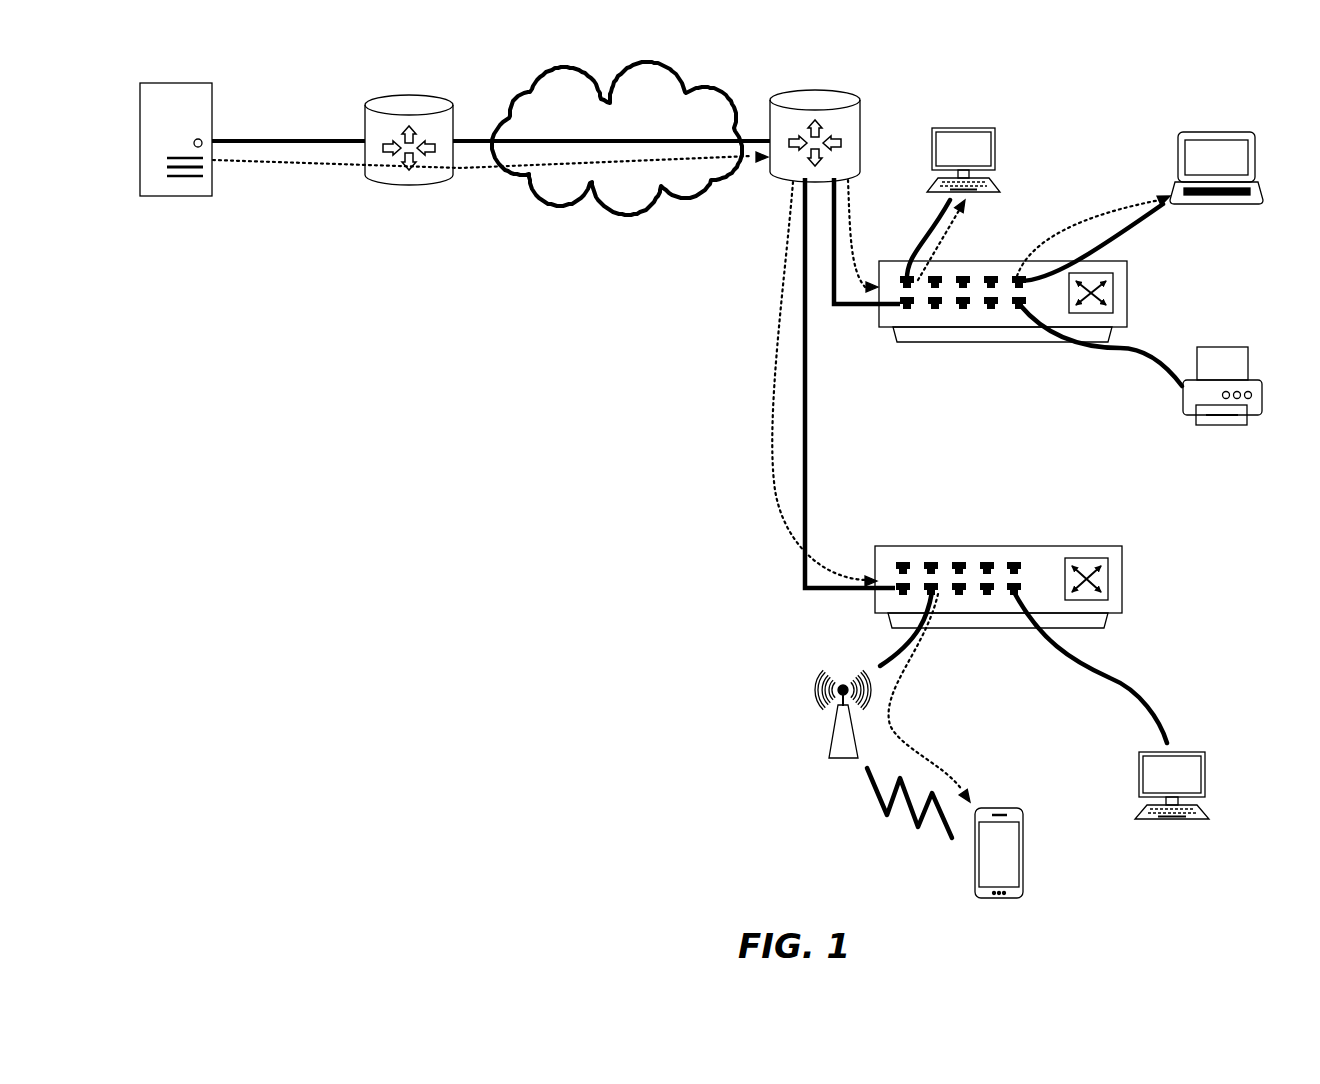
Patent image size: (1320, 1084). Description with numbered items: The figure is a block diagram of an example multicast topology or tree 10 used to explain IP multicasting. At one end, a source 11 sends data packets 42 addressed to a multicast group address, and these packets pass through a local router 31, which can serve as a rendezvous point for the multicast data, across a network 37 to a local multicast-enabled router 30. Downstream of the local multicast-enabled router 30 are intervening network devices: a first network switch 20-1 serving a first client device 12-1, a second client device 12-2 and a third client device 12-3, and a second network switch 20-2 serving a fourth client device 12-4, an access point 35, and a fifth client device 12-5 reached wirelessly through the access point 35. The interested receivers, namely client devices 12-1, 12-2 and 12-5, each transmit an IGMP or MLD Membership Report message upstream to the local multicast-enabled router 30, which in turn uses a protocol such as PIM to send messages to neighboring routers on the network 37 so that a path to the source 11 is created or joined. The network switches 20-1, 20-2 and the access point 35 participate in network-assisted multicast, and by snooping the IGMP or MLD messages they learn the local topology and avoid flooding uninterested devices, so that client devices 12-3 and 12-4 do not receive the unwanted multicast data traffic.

The multicast topology or tree 10 is at (1259, 61).
The source 11 is at (189, 233).
The local router 31 is at (409, 123).
The data packets 42 is at (485, 168).
The network 37 is at (617, 160).
The local multicast-enabled router 30 is at (815, 118).
The client device 12-1 is at (963, 144).
The client device 12-2 is at (1216, 150).
The client device 12-3 is at (1222, 372).
The network switch 20-1 is at (1003, 319).
The network switch 20-2 is at (998, 605).
The access point 35 is at (842, 729).
The client device 12-4 is at (1172, 808).
The client device 12-5 is at (999, 868).